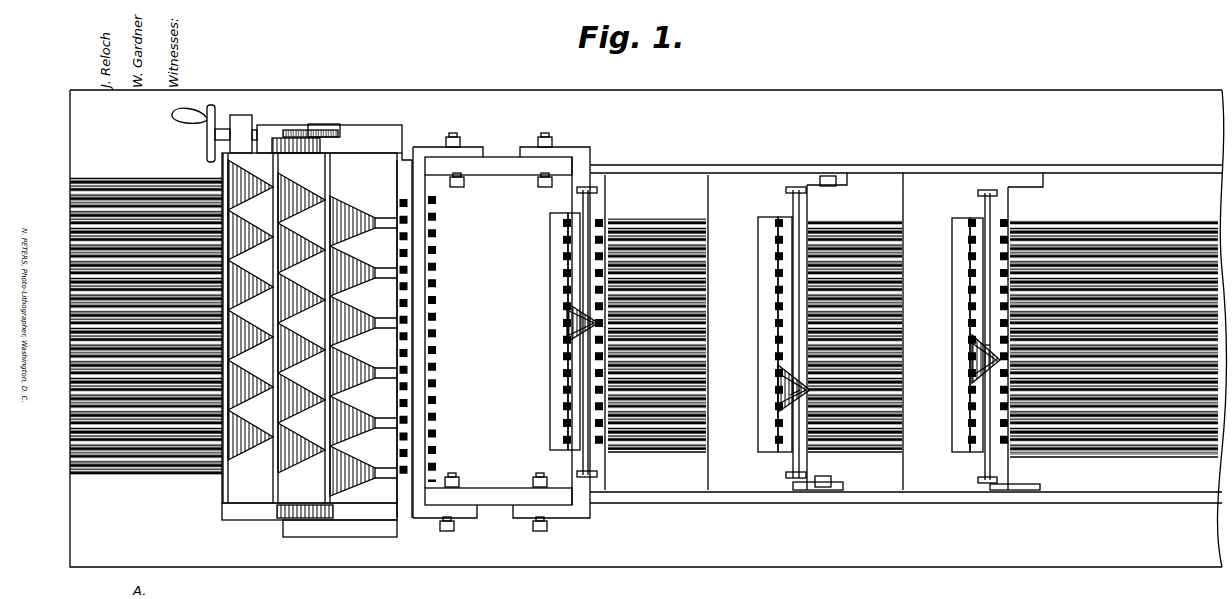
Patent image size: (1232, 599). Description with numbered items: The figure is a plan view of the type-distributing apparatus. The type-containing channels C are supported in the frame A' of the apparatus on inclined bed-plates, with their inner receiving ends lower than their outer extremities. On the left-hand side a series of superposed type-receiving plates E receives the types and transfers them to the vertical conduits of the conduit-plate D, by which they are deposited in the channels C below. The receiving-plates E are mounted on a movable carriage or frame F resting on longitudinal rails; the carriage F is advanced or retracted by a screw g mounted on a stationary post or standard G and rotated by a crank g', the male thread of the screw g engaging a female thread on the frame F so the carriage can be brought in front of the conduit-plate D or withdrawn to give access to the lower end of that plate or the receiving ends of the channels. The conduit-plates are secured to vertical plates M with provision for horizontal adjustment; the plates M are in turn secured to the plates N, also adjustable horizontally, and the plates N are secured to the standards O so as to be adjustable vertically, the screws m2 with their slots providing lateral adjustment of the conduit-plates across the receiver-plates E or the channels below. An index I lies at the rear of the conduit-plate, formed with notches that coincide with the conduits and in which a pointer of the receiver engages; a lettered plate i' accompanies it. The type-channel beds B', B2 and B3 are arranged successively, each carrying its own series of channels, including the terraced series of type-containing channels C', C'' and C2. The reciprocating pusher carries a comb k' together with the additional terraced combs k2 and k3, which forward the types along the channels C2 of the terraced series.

The type-containing channels C is at (146, 327).
The type-receiving plates E is at (309, 328).
The carriage F is at (317, 340).
The screw g is at (311, 120).
The post G is at (236, 134).
The crank g' is at (193, 133).
The conduit-plate D is at (392, 176).
The vertical plates M is at (420, 148).
The plates N is at (498, 157).
The standards O is at (498, 177).
The screws m2 is at (445, 339).
The lettered type plate i' is at (752, 332).
The index I is at (550, 345).
The combs k2 is at (972, 362).
The comb k' is at (767, 401).
The combs k3 is at (951, 343).
The frame A' is at (906, 340).
The type-channel bed B' is at (653, 332).
The type-containing channels C' is at (657, 460).
The type-channel bed B2 is at (855, 331).
The roller shaft C'' is at (855, 460).
The type-channel bed B3 is at (1111, 331).
The type-containing channels C2 is at (1114, 461).